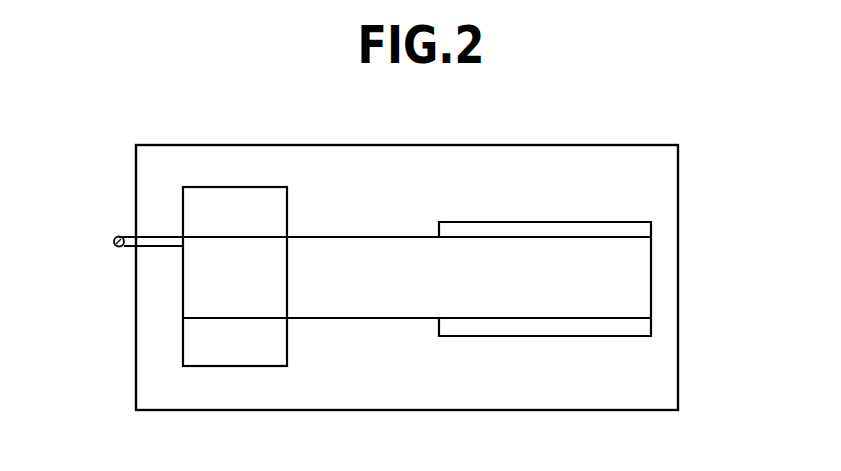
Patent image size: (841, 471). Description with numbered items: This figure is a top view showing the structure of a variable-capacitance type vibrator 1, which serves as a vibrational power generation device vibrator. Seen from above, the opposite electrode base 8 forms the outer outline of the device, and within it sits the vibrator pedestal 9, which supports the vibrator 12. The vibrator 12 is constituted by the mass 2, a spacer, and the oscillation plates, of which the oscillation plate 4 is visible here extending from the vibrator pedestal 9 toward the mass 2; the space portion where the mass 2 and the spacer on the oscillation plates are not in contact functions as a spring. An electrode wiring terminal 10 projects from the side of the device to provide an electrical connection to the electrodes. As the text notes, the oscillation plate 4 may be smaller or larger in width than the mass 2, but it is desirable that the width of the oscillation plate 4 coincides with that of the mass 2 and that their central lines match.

The variable-capacitance type vibrator 1 is at (669, 130).
The opposite electrode base 8 is at (668, 172).
The vibrator pedestal 9 is at (195, 338).
The electrode wiring terminal 10 is at (114, 241).
The mass 2 is at (633, 233).
The oscillation plate 4 is at (633, 288).
The vibrator 12 is at (480, 279).